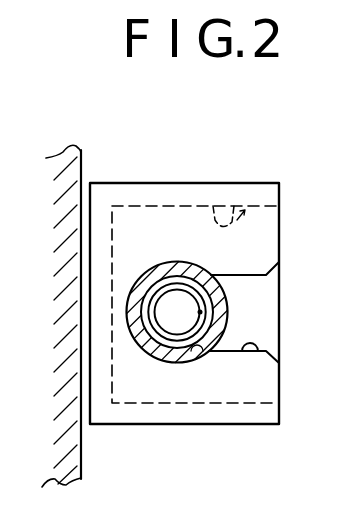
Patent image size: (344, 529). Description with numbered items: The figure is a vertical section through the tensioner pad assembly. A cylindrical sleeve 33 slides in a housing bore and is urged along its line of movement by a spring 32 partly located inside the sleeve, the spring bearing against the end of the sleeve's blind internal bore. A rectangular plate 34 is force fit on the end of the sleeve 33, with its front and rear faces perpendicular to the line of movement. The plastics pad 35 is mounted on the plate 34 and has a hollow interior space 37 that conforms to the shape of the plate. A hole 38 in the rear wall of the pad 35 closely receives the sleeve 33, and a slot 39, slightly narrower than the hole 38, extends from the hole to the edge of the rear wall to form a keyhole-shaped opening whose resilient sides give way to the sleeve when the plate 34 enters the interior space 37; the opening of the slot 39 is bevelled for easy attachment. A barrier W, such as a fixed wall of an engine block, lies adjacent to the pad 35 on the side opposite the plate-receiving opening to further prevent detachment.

The barrier W is at (86, 149).
The pad 35 is at (120, 181).
The plate 34 is at (151, 203).
The hollow interior space 37 is at (214, 204).
The cylindrical sleeve 33 is at (148, 360).
The spring 32 is at (173, 335).
The hole 38 is at (188, 342).
The slot 39 is at (242, 351).